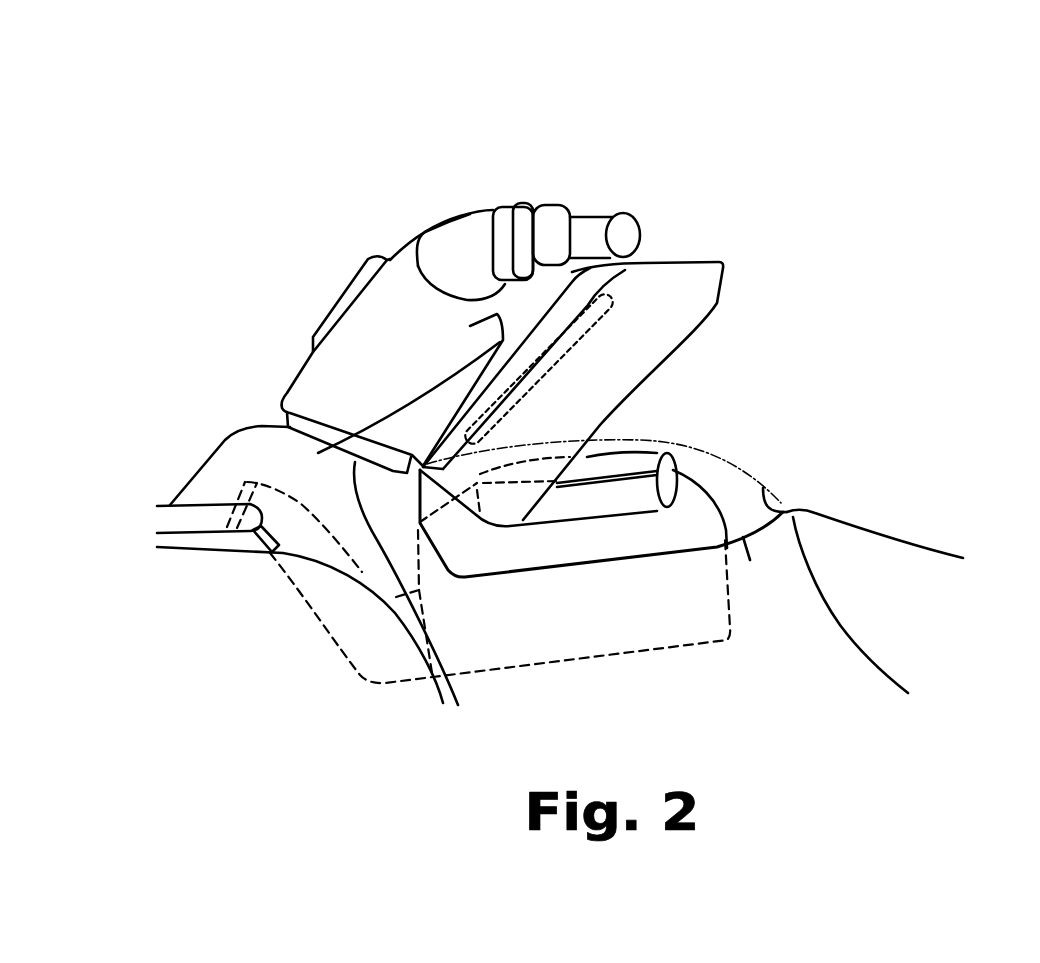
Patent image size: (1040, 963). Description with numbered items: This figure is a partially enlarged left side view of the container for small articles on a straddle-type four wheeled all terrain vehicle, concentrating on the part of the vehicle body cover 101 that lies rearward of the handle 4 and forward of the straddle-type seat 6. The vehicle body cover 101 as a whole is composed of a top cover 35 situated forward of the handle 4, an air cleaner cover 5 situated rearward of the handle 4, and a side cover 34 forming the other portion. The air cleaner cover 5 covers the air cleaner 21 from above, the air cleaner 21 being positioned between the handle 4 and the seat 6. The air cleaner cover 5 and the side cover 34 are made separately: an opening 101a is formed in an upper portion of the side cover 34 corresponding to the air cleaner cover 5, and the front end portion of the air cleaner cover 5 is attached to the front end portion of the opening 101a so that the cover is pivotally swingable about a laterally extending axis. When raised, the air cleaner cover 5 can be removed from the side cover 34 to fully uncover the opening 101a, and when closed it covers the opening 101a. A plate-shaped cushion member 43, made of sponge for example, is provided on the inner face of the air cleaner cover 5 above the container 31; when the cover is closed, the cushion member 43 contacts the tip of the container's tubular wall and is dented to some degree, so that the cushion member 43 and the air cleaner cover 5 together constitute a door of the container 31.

The handle 4 is at (481, 212).
The air cleaner cover 5 is at (680, 270).
The straddle-type seat 6 is at (867, 530).
The air cleaner 21 is at (763, 490).
The container 31 is at (716, 498).
The side cover 34 is at (668, 460).
The top cover 35 is at (552, 305).
The cushion member 43 is at (608, 316).
The vehicle body cover 101 is at (813, 70).
The opening 101a is at (763, 488).